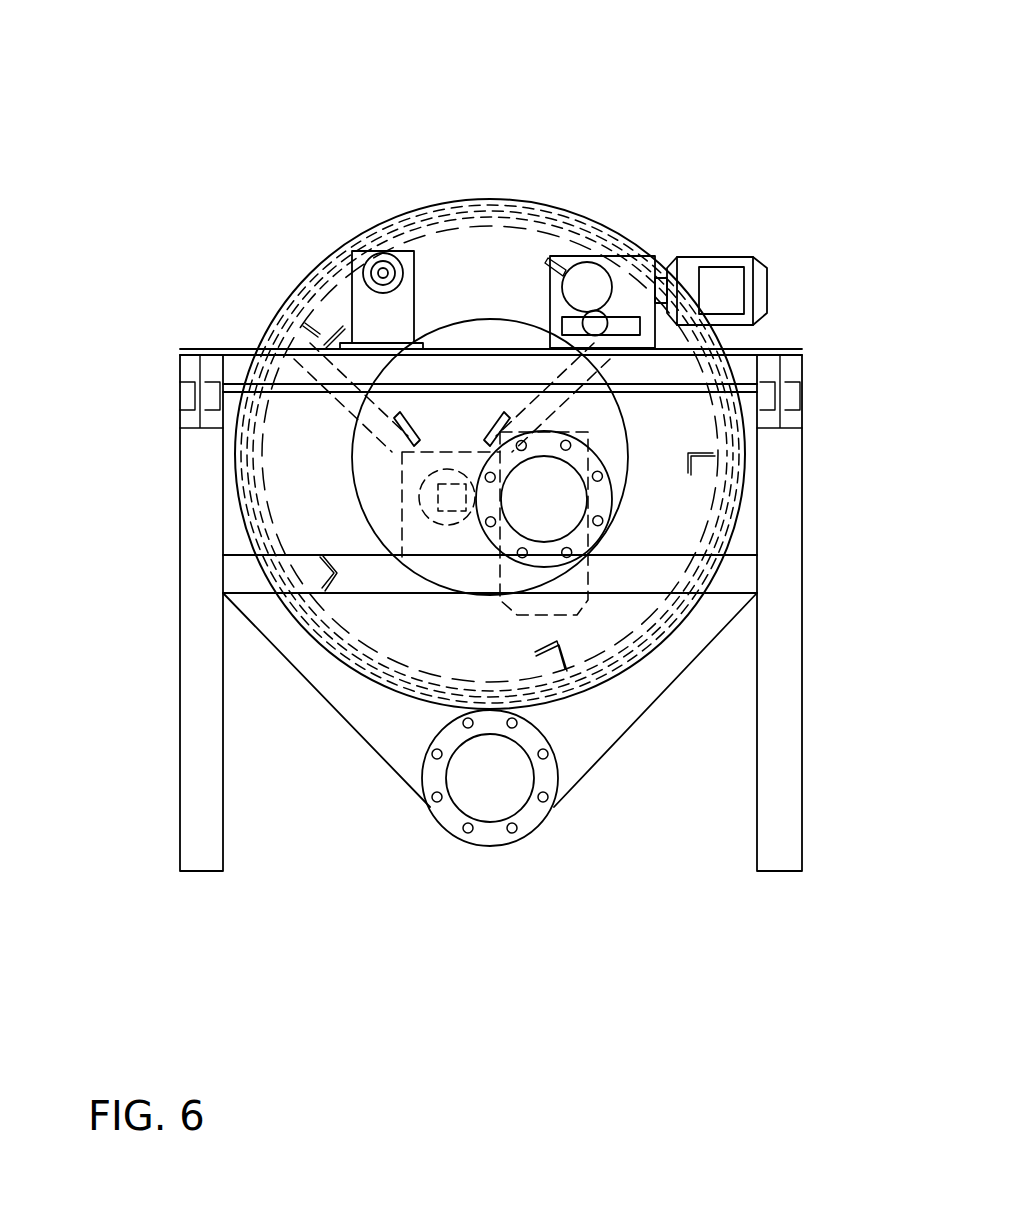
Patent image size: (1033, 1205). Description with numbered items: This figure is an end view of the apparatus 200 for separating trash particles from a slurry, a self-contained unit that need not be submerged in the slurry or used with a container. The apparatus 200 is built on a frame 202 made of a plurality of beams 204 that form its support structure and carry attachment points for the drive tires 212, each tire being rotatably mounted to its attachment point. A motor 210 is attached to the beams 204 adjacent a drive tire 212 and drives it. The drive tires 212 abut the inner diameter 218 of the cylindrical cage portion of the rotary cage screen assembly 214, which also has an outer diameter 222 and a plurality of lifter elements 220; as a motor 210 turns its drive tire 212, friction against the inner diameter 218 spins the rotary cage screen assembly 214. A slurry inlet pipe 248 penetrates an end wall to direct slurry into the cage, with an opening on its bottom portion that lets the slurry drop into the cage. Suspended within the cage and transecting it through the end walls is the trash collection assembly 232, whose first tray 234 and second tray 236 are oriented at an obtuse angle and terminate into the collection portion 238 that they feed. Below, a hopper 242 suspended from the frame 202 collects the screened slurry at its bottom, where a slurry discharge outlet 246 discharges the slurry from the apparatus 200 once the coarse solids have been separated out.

The apparatus 200 is at (777, 119).
The frame 202 is at (177, 677).
The beams 204 is at (215, 348).
The motors 210 is at (760, 258).
The drive tires 212 is at (566, 310).
The rotary cage screen assembly 214 is at (637, 692).
The inner diameter 218 is at (272, 525).
The lifter elements 220 is at (322, 590).
The outer diameter 222 is at (295, 288).
The trash collection assembly 232 is at (559, 414).
The first tray 234 is at (553, 377).
The second tray 236 is at (400, 415).
The collection portion 238 is at (445, 528).
The hopper 242 is at (292, 668).
The slurry discharge outlet 246 is at (505, 780).
The slurry inlet pipe 248 is at (543, 502).